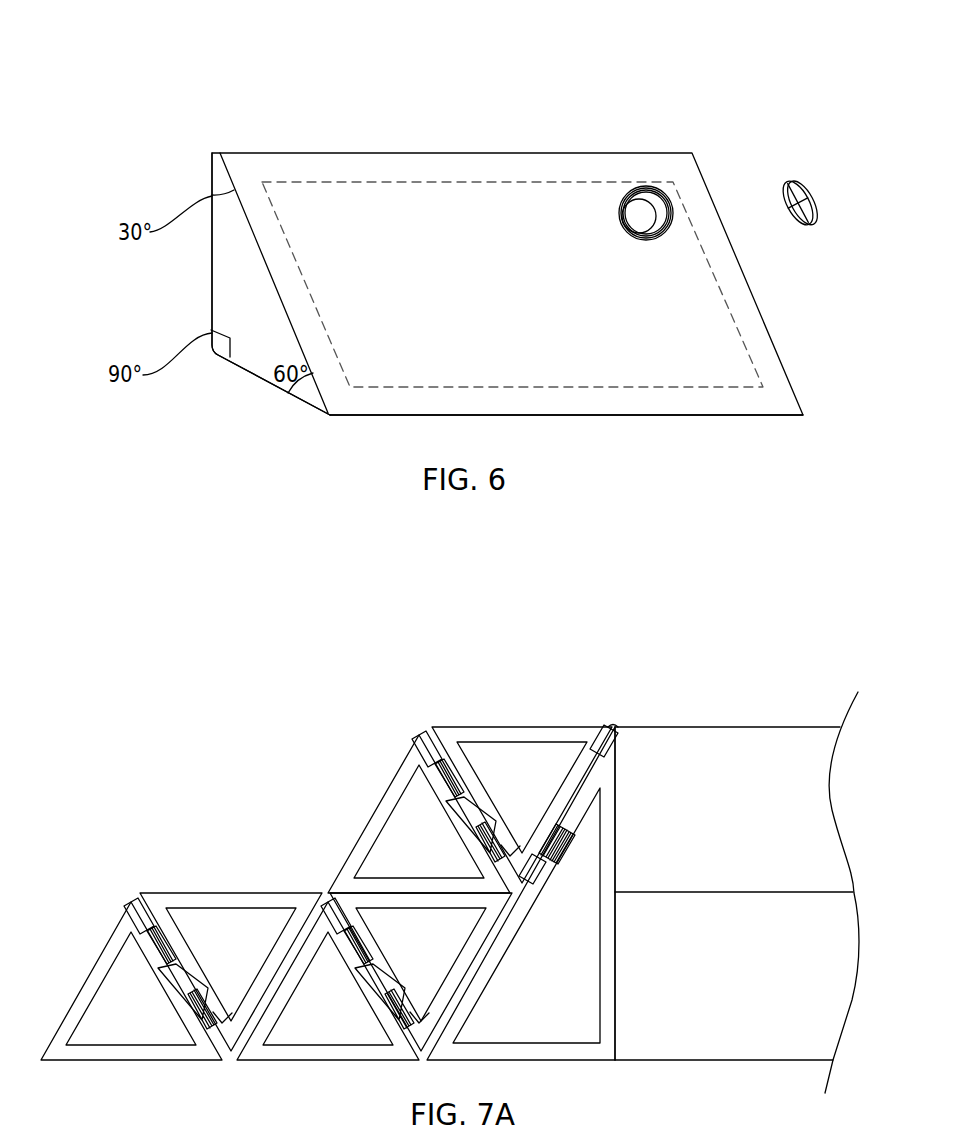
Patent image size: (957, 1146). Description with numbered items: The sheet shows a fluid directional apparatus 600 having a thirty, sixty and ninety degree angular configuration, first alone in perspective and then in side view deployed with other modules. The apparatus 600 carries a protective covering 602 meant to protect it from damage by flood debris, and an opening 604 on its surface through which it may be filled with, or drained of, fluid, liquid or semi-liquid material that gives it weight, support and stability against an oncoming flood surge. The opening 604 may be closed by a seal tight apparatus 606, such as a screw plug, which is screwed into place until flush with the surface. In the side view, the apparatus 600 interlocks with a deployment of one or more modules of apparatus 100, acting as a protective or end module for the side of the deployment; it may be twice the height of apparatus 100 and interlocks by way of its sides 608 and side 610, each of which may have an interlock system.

In FIG. 6, the fluid directional apparatus 600 is at (598, 143).
In FIG. 7A, the fluid directional apparatus 600 is at (565, 1035).
In FIG. 6, the protective covering 602 is at (380, 183).
In FIG. 6, the opening 604 is at (645, 190).
In FIG. 6, the seal tight apparatus 606 is at (805, 182).
In FIG. 7A, the seal tight apparatus 606 is at (440, 730).
In FIG. 6, the side 608 is at (212, 249).
In FIG. 7A, the side 608 is at (612, 848).
In FIG. 7A, the side 610 is at (602, 727).
In FIG. 7A, the apparatus 100 is at (540, 728).